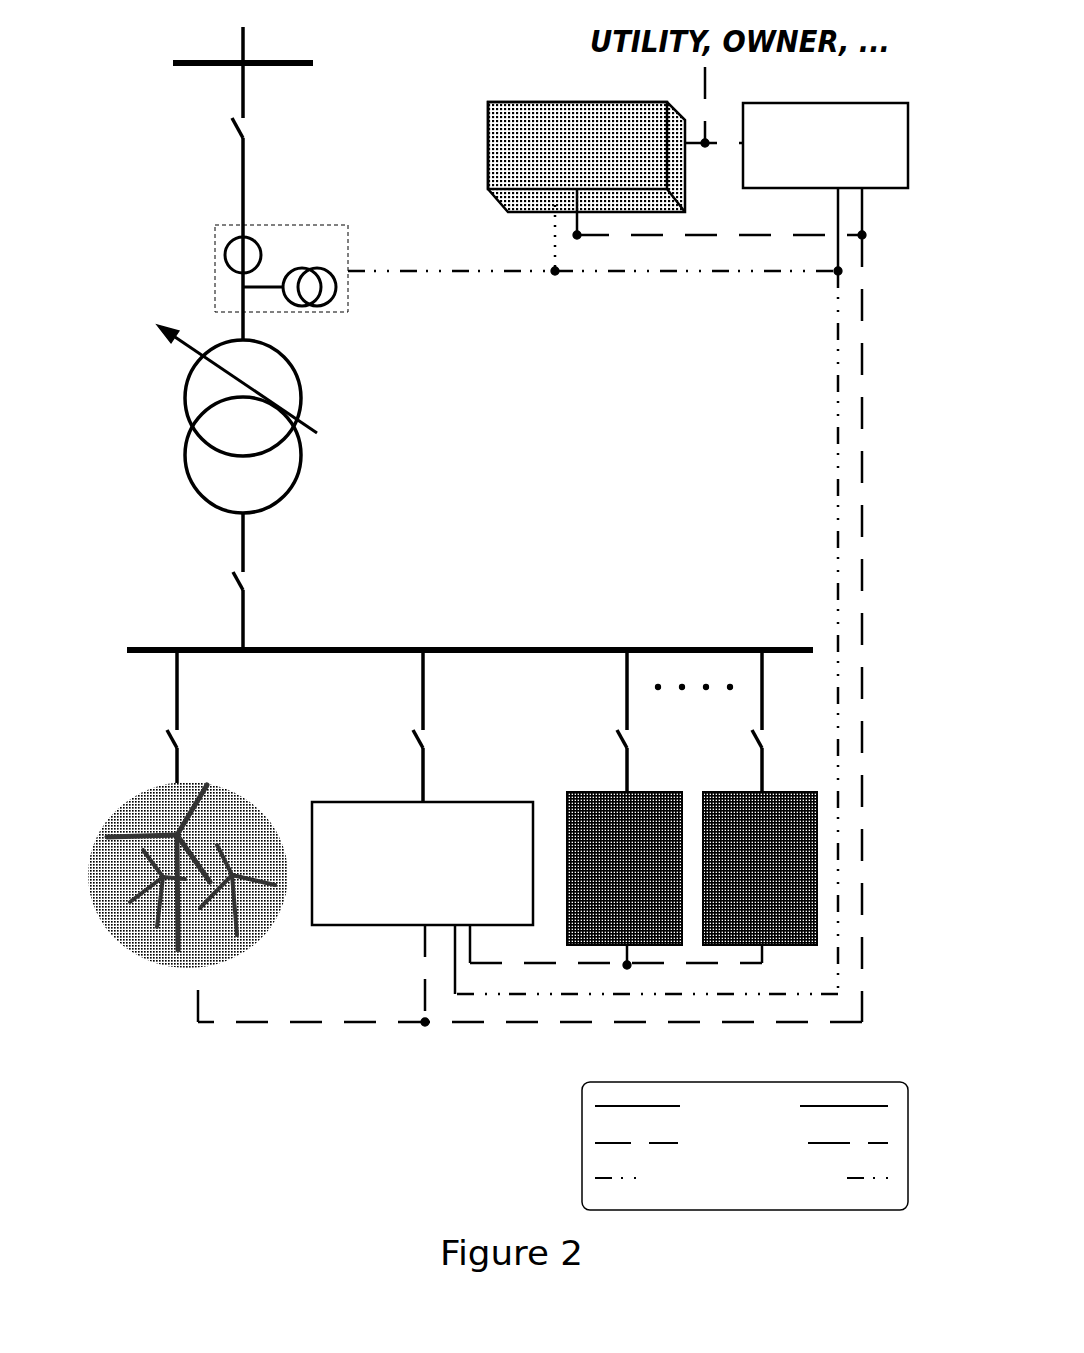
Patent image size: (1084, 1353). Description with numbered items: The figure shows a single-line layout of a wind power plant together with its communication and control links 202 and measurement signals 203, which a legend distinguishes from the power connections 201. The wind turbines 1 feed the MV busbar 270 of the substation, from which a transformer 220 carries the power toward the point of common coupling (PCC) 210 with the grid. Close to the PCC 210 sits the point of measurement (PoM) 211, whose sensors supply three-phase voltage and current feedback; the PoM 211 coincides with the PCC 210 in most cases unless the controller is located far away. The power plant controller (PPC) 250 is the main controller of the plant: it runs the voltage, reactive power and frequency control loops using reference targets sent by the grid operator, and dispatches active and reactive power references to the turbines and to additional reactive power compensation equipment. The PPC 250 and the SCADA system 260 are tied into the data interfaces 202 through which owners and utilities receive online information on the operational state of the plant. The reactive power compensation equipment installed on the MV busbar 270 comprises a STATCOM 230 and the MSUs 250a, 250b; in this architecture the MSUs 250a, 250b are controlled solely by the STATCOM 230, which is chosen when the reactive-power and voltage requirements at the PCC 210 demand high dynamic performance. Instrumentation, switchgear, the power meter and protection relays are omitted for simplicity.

The wind turbines / wind farm 1 is at (188, 866).
The power line 201 is at (741, 1105).
The communication/control links 202 is at (543, 611).
The measurement signals 203 is at (618, 690).
The PCC 210 is at (243, 180).
The PoM 211 is at (281, 233).
The transformer (TRF) 220 is at (308, 487).
The STATCOM 230 is at (422, 863).
The PPC 250 is at (586, 157).
The MSU 250a is at (624, 868).
The MSU 250b is at (760, 868).
The SCADA system 260 is at (825, 144).
The MV busbar 270 is at (470, 707).